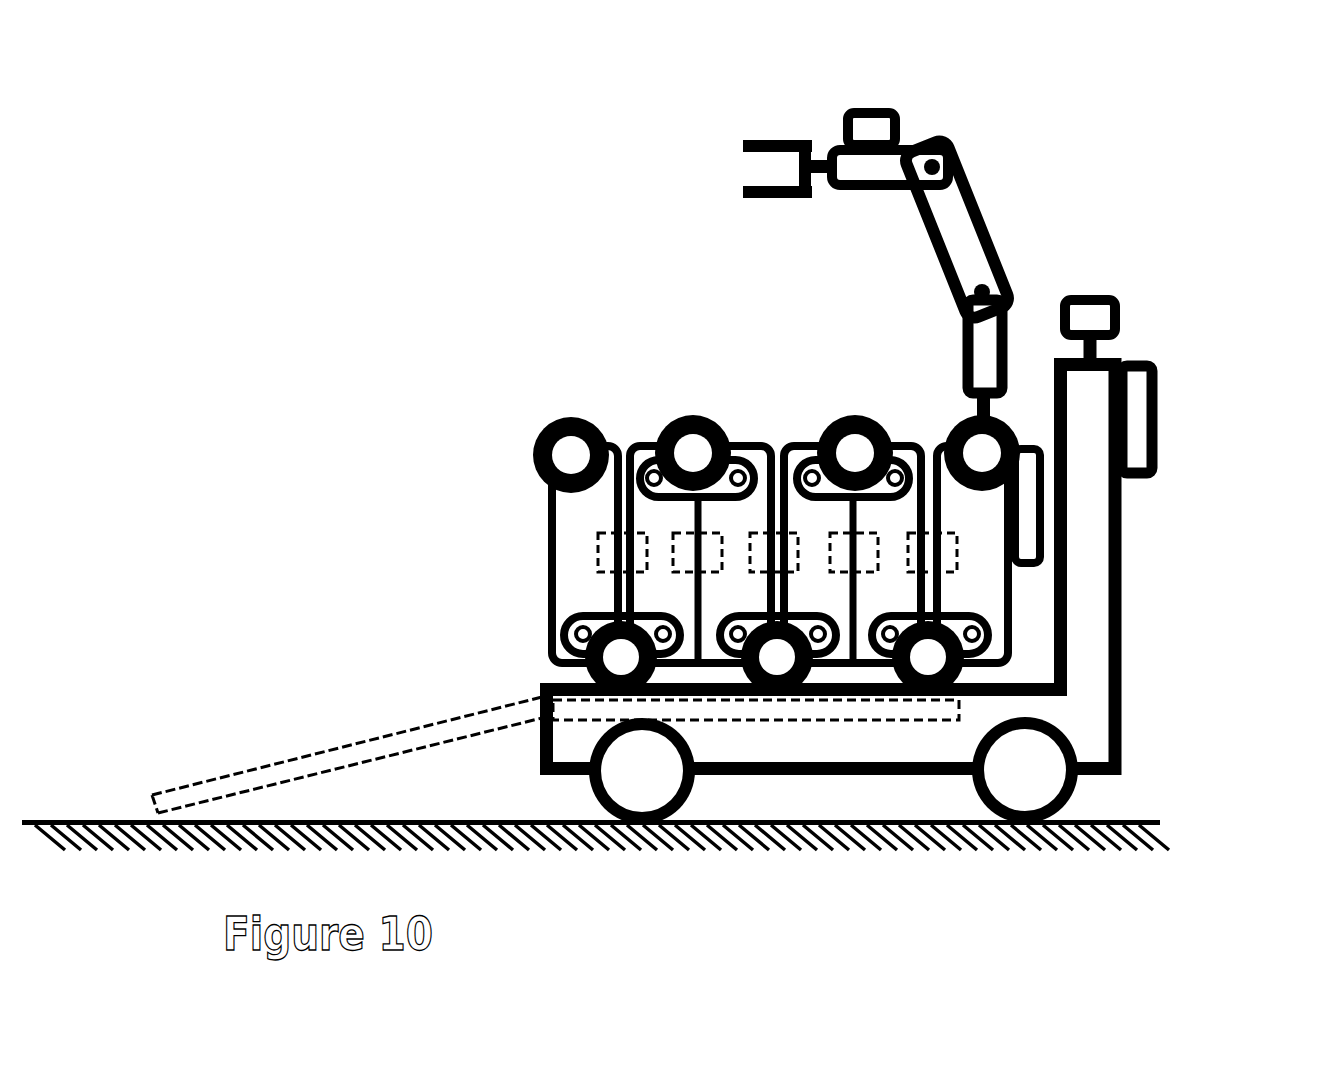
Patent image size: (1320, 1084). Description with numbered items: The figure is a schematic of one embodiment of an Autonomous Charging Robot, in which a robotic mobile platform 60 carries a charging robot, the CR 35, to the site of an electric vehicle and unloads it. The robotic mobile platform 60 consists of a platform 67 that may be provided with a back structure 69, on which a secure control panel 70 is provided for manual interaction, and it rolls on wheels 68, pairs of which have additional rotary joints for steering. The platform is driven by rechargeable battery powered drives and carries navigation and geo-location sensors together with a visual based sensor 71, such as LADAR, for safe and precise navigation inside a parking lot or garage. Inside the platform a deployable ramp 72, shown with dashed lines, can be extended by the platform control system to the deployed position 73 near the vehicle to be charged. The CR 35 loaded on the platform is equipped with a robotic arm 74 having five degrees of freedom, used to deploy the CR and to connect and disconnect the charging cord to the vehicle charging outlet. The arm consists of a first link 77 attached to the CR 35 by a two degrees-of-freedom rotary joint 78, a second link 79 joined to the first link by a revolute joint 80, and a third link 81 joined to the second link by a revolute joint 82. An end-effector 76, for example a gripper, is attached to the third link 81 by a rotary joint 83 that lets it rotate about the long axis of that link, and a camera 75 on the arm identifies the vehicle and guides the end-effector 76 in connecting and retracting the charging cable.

The CR embodiment 35 is at (472, 440).
The robotic mobile platform 60 is at (932, 660).
The platform 67 is at (897, 740).
The wheels 68 is at (647, 780).
The back structure 69 is at (1092, 638).
The secure control panel 70 is at (1157, 417).
The visual based sensor 71 is at (1128, 304).
The deployable ramp 72 is at (798, 722).
The deployed ramp position 73 is at (320, 740).
The robotic arm 74 is at (878, 230).
The camera 75 is at (840, 108).
The end-effector 76 is at (727, 157).
The first link 77 is at (985, 342).
The two degrees-of-freedom rotary joint 78 is at (962, 412).
The second link 79 is at (965, 248).
The revolute joint 80 is at (958, 298).
The third link 81 is at (892, 163).
The revolute joint 82 is at (938, 142).
The rotary joint 83 is at (822, 147).